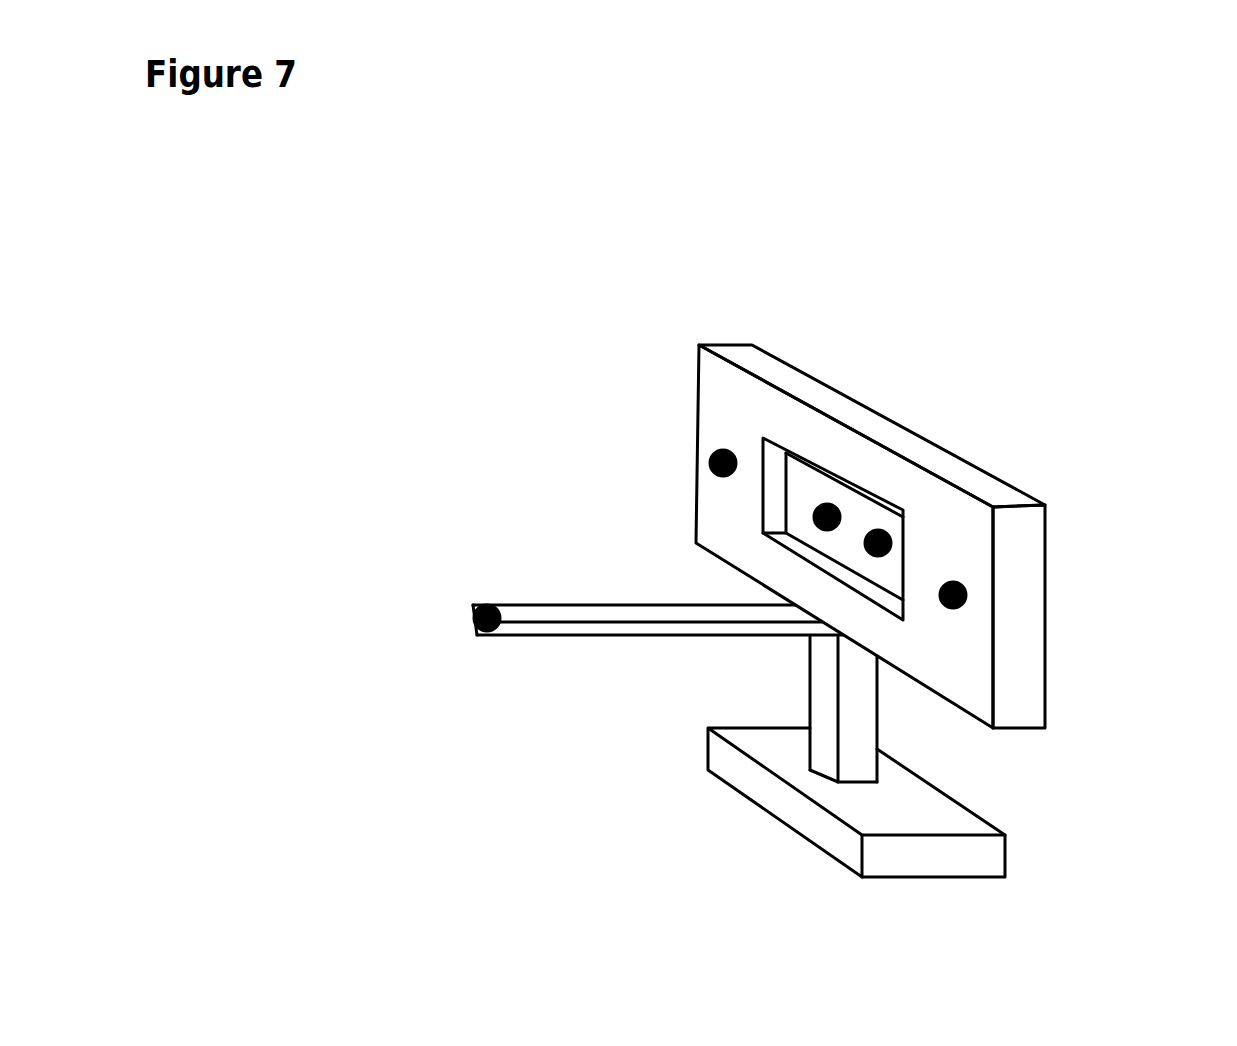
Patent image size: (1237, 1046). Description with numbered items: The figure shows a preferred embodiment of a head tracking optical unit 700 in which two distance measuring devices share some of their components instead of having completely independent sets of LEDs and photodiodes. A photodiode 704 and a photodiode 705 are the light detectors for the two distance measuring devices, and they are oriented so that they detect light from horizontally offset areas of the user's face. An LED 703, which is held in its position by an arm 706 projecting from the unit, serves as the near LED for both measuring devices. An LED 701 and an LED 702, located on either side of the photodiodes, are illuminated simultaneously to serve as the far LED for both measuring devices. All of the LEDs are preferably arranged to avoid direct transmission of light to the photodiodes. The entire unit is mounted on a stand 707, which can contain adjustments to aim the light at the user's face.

The head tracking optical unit 700 is at (780, 536).
The LED 701 is at (713, 458).
The LED 702 is at (966, 597).
The LED 703 is at (477, 630).
The photodiode 704 is at (834, 506).
The photodiode 705 is at (885, 532).
The arm 706 is at (682, 635).
The stand 707 is at (925, 782).